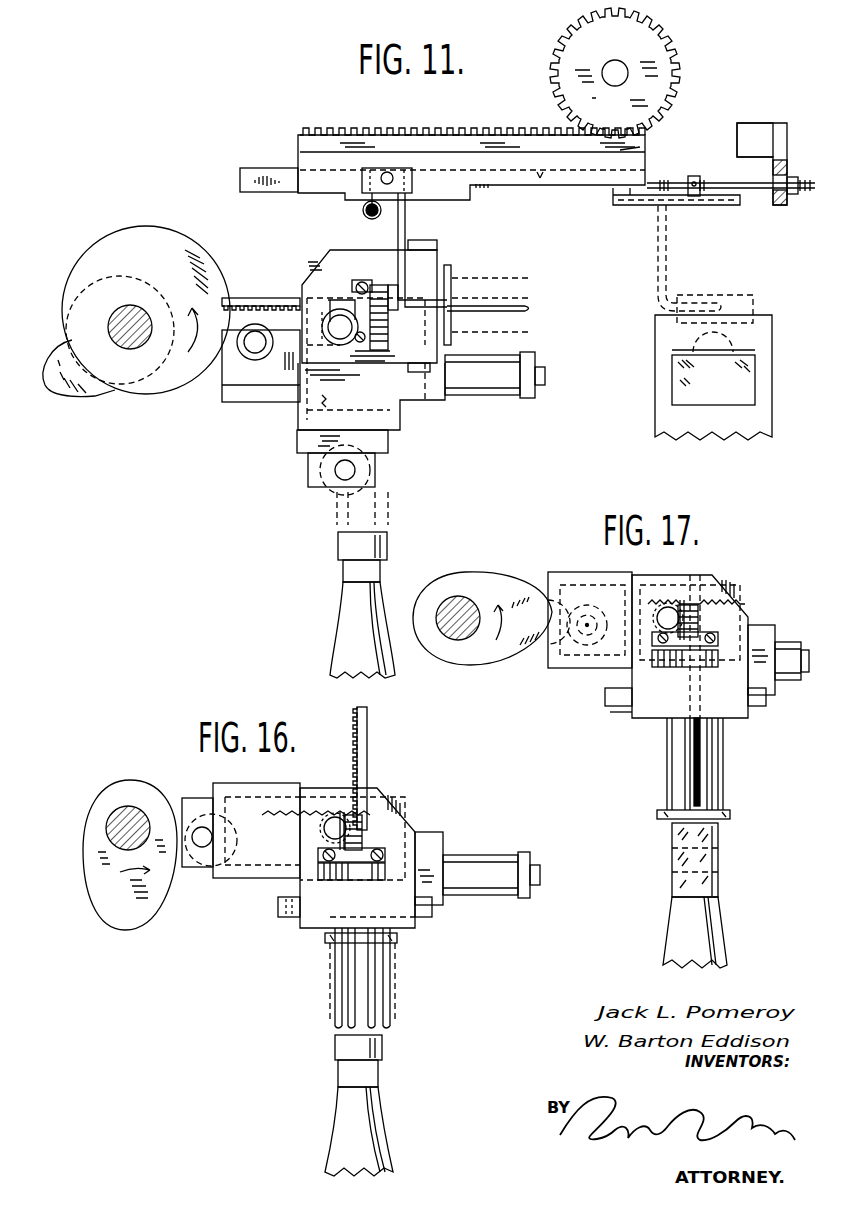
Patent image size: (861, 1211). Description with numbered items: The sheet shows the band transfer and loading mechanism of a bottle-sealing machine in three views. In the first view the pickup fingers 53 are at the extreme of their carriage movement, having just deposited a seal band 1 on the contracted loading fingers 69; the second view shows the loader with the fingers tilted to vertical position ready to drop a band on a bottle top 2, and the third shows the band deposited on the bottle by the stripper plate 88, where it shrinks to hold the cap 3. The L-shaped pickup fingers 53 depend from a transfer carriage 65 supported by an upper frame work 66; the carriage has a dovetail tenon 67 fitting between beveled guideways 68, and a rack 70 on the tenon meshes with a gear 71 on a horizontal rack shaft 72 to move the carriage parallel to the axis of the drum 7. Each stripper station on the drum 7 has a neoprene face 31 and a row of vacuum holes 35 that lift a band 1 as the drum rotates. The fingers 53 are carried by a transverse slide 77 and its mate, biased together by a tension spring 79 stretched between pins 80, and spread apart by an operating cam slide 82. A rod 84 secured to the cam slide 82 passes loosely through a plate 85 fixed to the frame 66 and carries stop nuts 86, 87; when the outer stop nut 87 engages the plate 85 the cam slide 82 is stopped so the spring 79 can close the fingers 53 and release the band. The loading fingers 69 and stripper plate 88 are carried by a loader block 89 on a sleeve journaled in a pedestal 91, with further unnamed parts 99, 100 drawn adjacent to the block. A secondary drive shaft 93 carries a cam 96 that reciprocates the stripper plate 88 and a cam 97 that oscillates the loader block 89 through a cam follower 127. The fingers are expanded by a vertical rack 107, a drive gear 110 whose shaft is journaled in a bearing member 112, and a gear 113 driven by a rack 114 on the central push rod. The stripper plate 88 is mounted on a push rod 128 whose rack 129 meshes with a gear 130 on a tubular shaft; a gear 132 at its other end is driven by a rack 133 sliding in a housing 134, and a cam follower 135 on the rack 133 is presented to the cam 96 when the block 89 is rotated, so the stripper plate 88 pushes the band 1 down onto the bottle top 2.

In FIG. 11, the seal band 1 is at (518, 304).
In FIG. 17, the seal band 1 is at (682, 846).
In FIG. 16, the seal band 1 is at (332, 986).
In FIG. 11, the bottle top 2 is at (343, 600).
In FIG. 17, the bottle top 2 is at (720, 905).
In FIG. 16, the bottle top 2 is at (338, 1102).
In FIG. 11, the cap 3 is at (338, 546).
In FIG. 17, the cap 3 is at (720, 837).
In FIG. 16, the cap 3 is at (336, 1048).
In FIG. 11, the drum 7 is at (655, 386).
In FIG. 11, the neoprene face 31 is at (680, 360).
In FIG. 11, the vacuum holes 35 is at (713, 341).
In FIG. 11, the pickup fingers 53 is at (407, 220).
In FIG. 11, the transfer carriage 65 is at (540, 180).
In FIG. 11, the upper frame work 66 is at (740, 125).
In FIG. 11, the dovetail tenon 67 is at (642, 147).
In FIG. 11, the beveled guideways 68 is at (752, 145).
In FIG. 11, the loading fingers 69 is at (496, 298).
In FIG. 17, the loading fingers 69 is at (668, 758).
In FIG. 16, the loading fingers 69 is at (350, 1006).
In FIG. 11, the rack 70 is at (497, 130).
In FIG. 11, the gear 71 is at (665, 68).
In FIG. 11, the rack shaft 72 is at (619, 64).
In FIG. 11, the transverse slide 77 is at (414, 170).
In FIG. 11, the tension spring 79 is at (362, 212).
In FIG. 11, the pins 80 is at (372, 204).
In FIG. 11, the operating cam slide 82 is at (257, 168).
In FIG. 11, the rod 84 is at (711, 182).
In FIG. 11, the plate 85 is at (780, 206).
In FIG. 11, the stop nut 86 is at (693, 176).
In FIG. 11, the stop nut 87 is at (792, 177).
In FIG. 11, the stripper plate 88 is at (451, 265).
In FIG. 17, the stripper plate 88 is at (730, 812).
In FIG. 16, the stripper plate 88 is at (397, 938).
In FIG. 11, the loader block 89 is at (342, 262).
In FIG. 17, the loader block 89 is at (738, 625).
In FIG. 16, the loader block 89 is at (396, 828).
In FIG. 11, the pedestal 91 is at (445, 400).
In FIG. 17, the pedestal 91 is at (772, 680).
In FIG. 16, the pedestal 91 is at (436, 896).
In FIG. 11, the secondary drive shaft 93 is at (132, 318).
In FIG. 17, the secondary drive shaft 93 is at (462, 598).
In FIG. 16, the secondary drive shaft 93 is at (130, 810).
In FIG. 11, the cam 96 is at (90, 398).
In FIG. 17, the cam 96 is at (512, 664).
In FIG. 16, the cam 96 is at (142, 930).
In FIG. 11, the cam 97 is at (176, 393).
In FIG. 11, the lower housing 99 is at (418, 374).
In FIG. 17, the lower housing 99 is at (615, 702).
In FIG. 16, the lower housing 99 is at (285, 917).
In FIG. 11, the mounting block 100 is at (430, 241).
In FIG. 17, the mounting block 100 is at (760, 706).
In FIG. 16, the mounting block 100 is at (432, 915).
In FIG. 11, the vertical rack 107 is at (394, 286).
In FIG. 17, the vertical rack 107 is at (660, 668).
In FIG. 16, the vertical rack 107 is at (326, 880).
In FIG. 11, the drive gear 110 is at (386, 322).
In FIG. 17, the drive gear 110 is at (700, 655).
In FIG. 16, the drive gear 110 is at (360, 870).
In FIG. 11, the bearing member 112 is at (360, 283).
In FIG. 17, the bearing member 112 is at (716, 640).
In FIG. 16, the bearing member 112 is at (385, 854).
In FIG. 11, the gear 113 is at (336, 308).
In FIG. 17, the gear 113 is at (690, 620).
In FIG. 16, the gear 113 is at (360, 830).
In FIG. 11, the rack 114 is at (379, 285).
In FIG. 17, the rack 114 is at (698, 622).
In FIG. 16, the rack 114 is at (362, 836).
In FIG. 11, the cam follower 127 is at (258, 362).
In FIG. 11, the push rod 128 is at (262, 298).
In FIG. 17, the push rod 128 is at (700, 752).
In FIG. 16, the push rod 128 is at (368, 740).
In FIG. 11, the rack 129 is at (268, 310).
In FIG. 16, the rack 129 is at (356, 740).
In FIG. 17, the gear 130 is at (670, 600).
In FIG. 16, the gear 130 is at (338, 814).
In FIG. 17, the gear 132 is at (656, 615).
In FIG. 16, the gear 132 is at (322, 845).
In FIG. 11, the rack 133 is at (308, 470).
In FIG. 16, the rack 133 is at (200, 798).
In FIG. 11, the housing 134 is at (297, 442).
In FIG. 17, the housing 134 is at (572, 668).
In FIG. 16, the housing 134 is at (237, 880).
In FIG. 11, the cam follower 135 is at (338, 490).
In FIG. 17, the cam follower 135 is at (587, 604).
In FIG. 16, the cam follower 135 is at (201, 850).